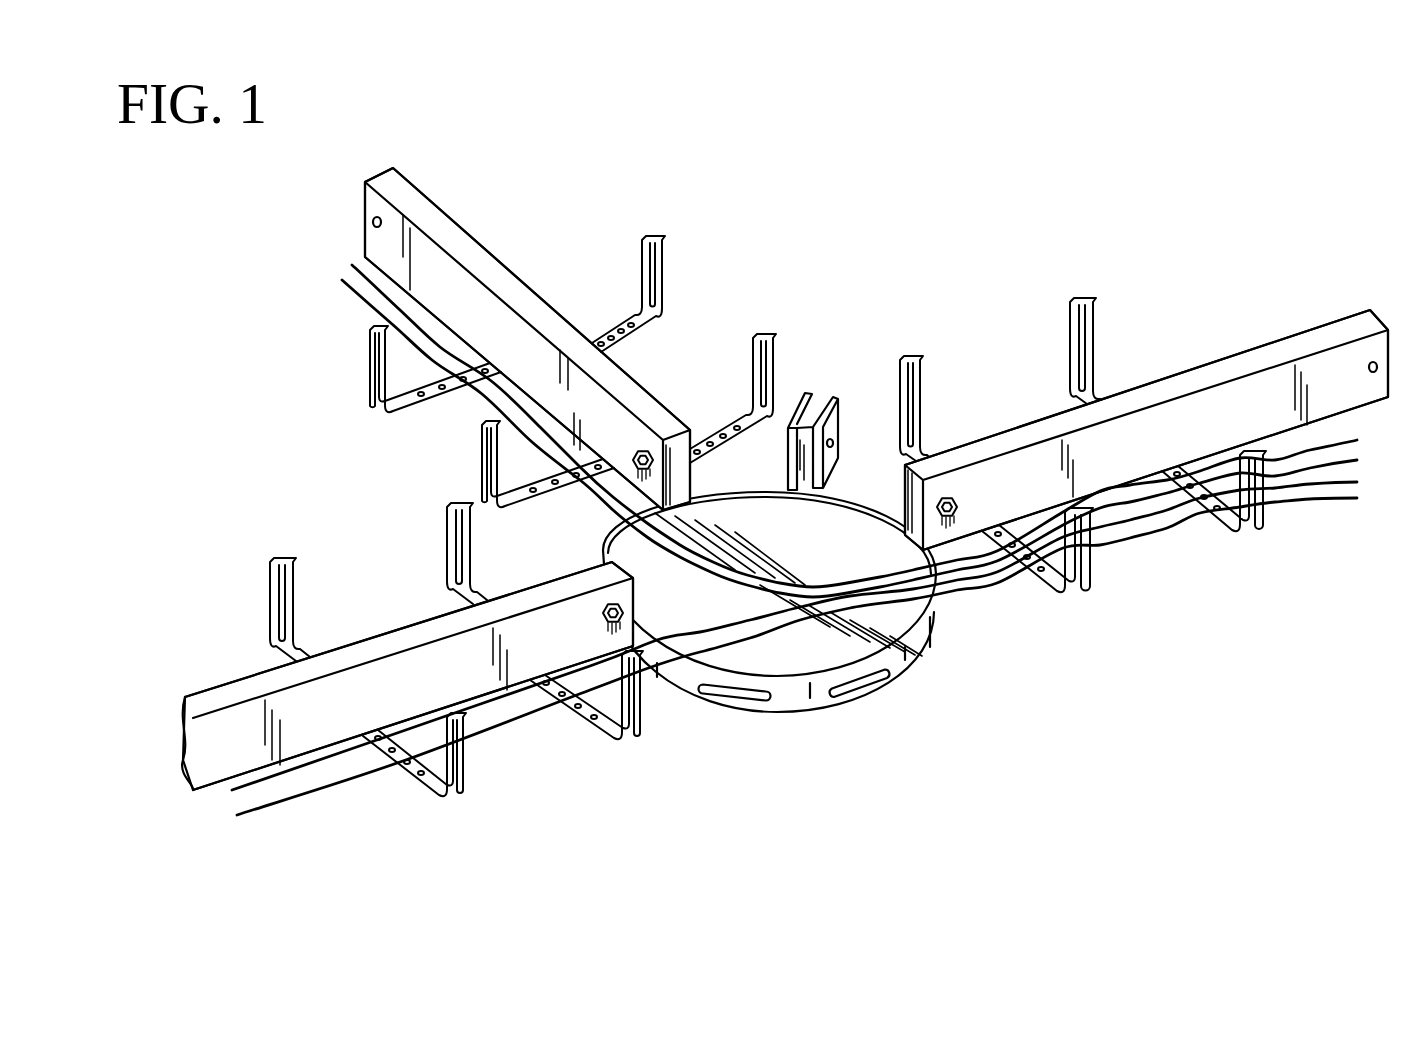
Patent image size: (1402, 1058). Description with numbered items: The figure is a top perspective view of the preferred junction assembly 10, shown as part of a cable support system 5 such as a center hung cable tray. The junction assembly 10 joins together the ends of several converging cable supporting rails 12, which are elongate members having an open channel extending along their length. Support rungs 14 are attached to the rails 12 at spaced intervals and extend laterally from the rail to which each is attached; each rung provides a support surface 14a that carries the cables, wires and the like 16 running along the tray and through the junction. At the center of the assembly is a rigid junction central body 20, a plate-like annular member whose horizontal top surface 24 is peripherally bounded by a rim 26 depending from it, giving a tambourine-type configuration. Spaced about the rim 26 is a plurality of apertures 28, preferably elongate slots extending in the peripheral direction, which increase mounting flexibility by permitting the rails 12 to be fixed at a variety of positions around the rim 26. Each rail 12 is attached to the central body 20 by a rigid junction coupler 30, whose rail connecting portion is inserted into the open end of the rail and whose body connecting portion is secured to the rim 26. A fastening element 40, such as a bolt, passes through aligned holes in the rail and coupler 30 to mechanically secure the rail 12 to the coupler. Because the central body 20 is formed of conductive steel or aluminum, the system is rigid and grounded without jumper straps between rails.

The cable support system 5 is at (963, 230).
The junction assembly 10 is at (815, 647).
The cable supporting rails 12 is at (462, 247).
The support rungs 14 is at (665, 275).
The support surface 14a is at (420, 390).
The cables, wires and the like 16 is at (352, 282).
The junction central body 20 is at (757, 648).
The top surface 24 is at (900, 610).
The rim 26 is at (675, 688).
The apertures 28 is at (886, 672).
The junction coupler 30 is at (836, 400).
The fastening element 40 is at (950, 496).